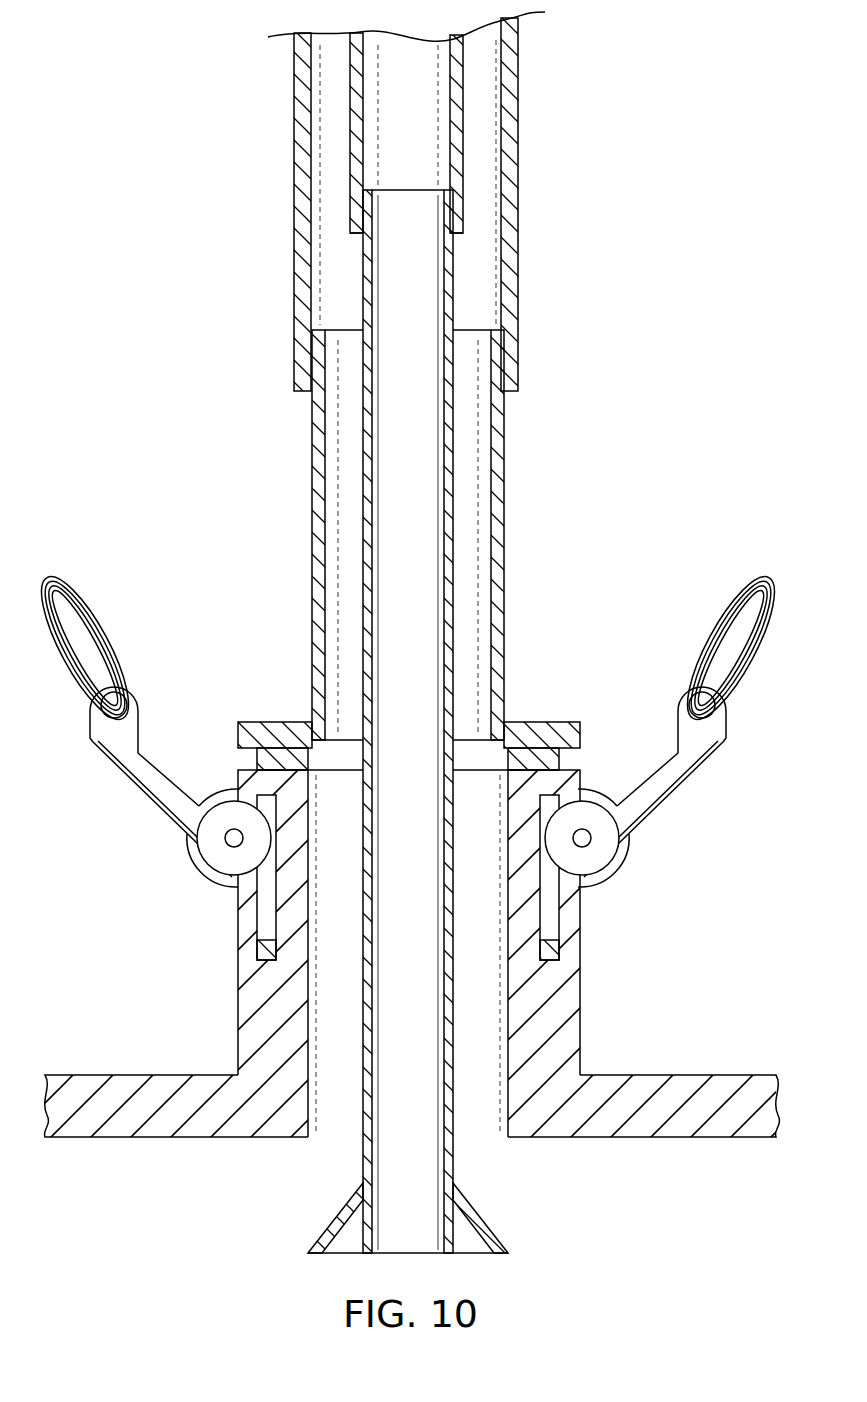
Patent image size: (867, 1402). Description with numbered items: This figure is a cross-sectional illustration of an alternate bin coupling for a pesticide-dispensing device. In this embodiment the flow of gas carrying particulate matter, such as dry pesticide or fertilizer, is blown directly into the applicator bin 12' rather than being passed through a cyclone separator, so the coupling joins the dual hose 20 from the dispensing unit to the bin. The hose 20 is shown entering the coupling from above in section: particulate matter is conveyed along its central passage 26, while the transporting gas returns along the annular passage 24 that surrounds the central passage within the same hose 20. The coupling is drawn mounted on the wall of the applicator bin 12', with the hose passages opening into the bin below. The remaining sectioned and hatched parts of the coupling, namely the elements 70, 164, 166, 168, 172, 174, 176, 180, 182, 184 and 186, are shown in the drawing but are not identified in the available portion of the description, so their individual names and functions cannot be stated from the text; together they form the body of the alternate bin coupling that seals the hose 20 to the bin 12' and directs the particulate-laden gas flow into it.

The applicator bin 12' is at (411, 1061).
The flexible hose 20 is at (518, 197).
The annular passage 24 is at (472, 127).
The central passage 26 is at (421, 109).
The lower end of inner tube 70 is at (366, 152).
The adapter tube 164 is at (505, 530).
The coupler body 166 is at (582, 1005).
The inner pipe 168 is at (453, 453).
The space below base plate 172 is at (214, 1204).
The flared end of inner pipe 174 is at (490, 1232).
The annular gap 176 is at (353, 458).
The collar 180 is at (553, 724).
The cam pin 182 is at (273, 805).
The retaining nut 184 is at (553, 928).
The cam lever 186 is at (240, 932).